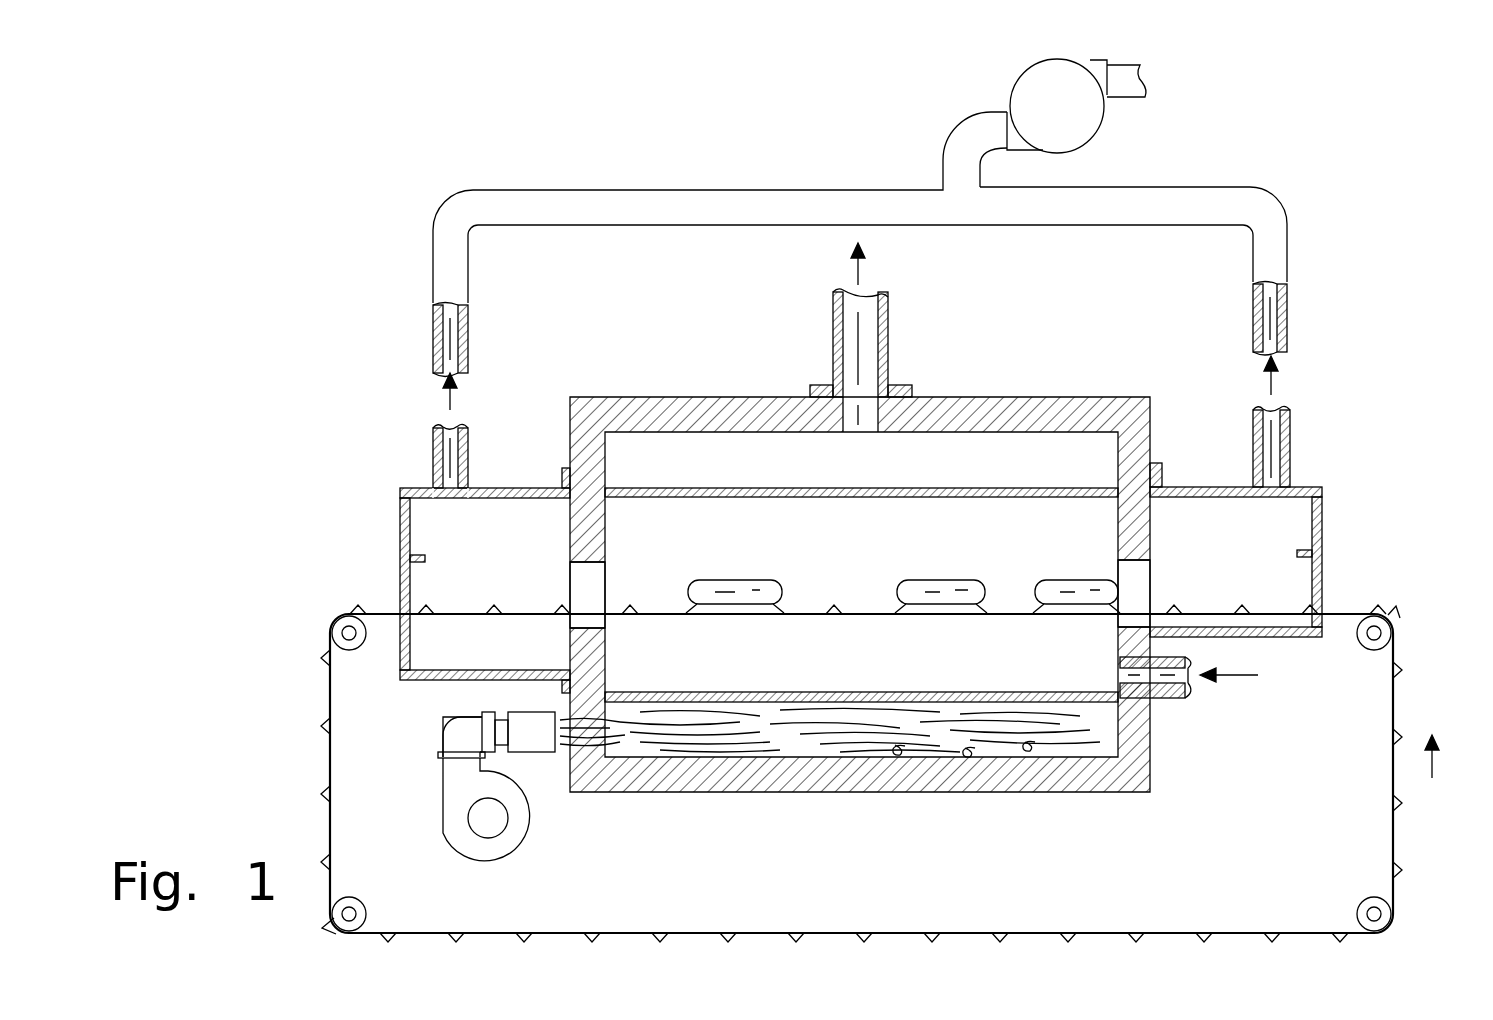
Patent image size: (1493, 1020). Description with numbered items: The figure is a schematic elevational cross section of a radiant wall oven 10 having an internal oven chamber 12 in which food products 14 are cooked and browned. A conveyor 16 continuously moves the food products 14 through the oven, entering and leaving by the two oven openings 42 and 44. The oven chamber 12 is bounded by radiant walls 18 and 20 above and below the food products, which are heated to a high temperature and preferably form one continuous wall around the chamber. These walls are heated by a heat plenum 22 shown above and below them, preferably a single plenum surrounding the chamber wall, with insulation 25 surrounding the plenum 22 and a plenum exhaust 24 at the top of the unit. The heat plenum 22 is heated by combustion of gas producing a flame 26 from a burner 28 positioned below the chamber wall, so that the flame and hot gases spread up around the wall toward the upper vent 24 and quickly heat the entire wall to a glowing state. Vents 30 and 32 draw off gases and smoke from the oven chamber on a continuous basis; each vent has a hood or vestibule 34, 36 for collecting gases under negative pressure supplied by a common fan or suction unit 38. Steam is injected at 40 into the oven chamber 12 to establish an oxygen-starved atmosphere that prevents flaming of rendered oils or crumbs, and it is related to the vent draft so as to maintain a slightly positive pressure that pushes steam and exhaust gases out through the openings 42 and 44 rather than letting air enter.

The radiant wall oven 10 is at (1148, 352).
The oven chamber 12 is at (782, 555).
The food products 14 is at (692, 588).
The conveyor 16 is at (1400, 703).
The upper radiant wall 18 is at (917, 498).
The lower radiant wall 20 is at (838, 691).
The heat plenum 22 is at (702, 472).
The plenum exhaust 24 is at (888, 346).
The insulation 25 is at (1013, 398).
The flame 26 is at (795, 732).
The burner 28 is at (443, 825).
The vent 30 is at (1290, 446).
The vent 32 is at (432, 456).
The hood or vestibule 34 is at (1285, 528).
The hood or vestibule 36 is at (400, 529).
The fan or suction unit 38 is at (1042, 115).
The steam injection 40 is at (1178, 694).
The oven opening 42 is at (1140, 574).
The oven opening 44 is at (590, 585).